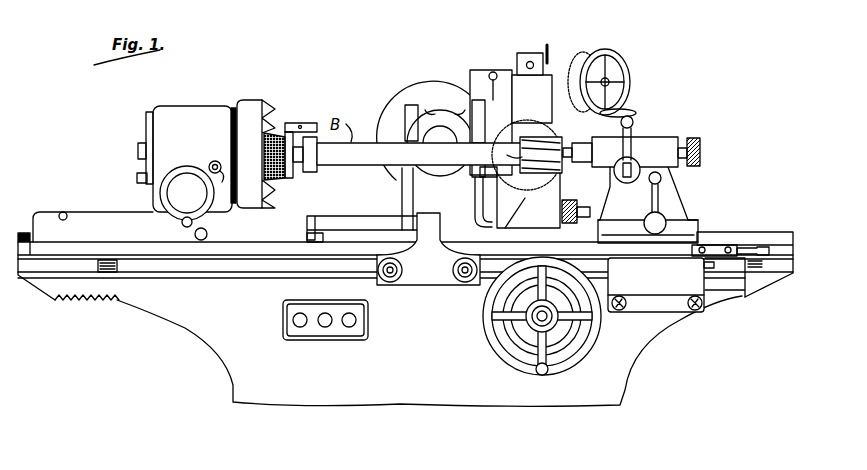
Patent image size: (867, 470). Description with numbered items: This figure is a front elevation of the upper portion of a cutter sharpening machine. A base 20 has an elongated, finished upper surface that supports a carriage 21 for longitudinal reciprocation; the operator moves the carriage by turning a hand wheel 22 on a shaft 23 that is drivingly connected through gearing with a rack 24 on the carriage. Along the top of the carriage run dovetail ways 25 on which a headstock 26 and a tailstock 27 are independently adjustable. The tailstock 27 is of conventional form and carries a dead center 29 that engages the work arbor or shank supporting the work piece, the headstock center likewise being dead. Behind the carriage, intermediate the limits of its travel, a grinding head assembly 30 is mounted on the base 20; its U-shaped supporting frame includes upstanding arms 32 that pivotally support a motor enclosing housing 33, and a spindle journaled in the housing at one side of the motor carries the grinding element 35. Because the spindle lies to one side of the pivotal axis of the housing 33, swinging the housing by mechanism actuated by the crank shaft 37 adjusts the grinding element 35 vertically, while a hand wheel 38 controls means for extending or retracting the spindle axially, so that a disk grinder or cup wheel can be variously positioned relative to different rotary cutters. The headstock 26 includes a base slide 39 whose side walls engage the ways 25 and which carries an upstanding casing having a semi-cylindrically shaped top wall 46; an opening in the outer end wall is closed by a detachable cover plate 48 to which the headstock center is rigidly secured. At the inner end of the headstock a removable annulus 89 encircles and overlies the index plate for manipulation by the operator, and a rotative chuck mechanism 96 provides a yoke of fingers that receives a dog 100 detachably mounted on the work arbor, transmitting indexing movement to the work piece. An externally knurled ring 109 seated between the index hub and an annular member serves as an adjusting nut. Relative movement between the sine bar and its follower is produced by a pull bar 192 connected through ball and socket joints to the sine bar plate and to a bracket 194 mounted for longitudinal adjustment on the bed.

The base 20 is at (230, 352).
The carriage 21 is at (62, 290).
The hand wheel 22 is at (493, 348).
The shaft 23 is at (540, 318).
The rack 24 is at (107, 300).
The dovetail ways 25 is at (24, 233).
The headstock 26 is at (240, 91).
The tailstock 27 is at (671, 130).
The center 29 is at (568, 173).
The grinding head assembly 30 is at (460, 75).
The upstanding arms 32 is at (412, 192).
The motor enclosing housing 33 is at (400, 130).
The grinding element 35 is at (527, 198).
The crank shaft 37 is at (590, 212).
The hand wheel 38 is at (612, 70).
The base slide 39 is at (152, 178).
The semi-cylindrically shaped top wall 46 is at (187, 82).
The detachable cover plate 48 is at (146, 125).
The annulus 89 is at (272, 99).
The rotative chuck mechanism 96 is at (301, 117).
The dog 100 is at (306, 170).
The externally knurled ring 109 is at (284, 177).
The pull bar 192 is at (366, 223).
The bracket 194 is at (425, 225).